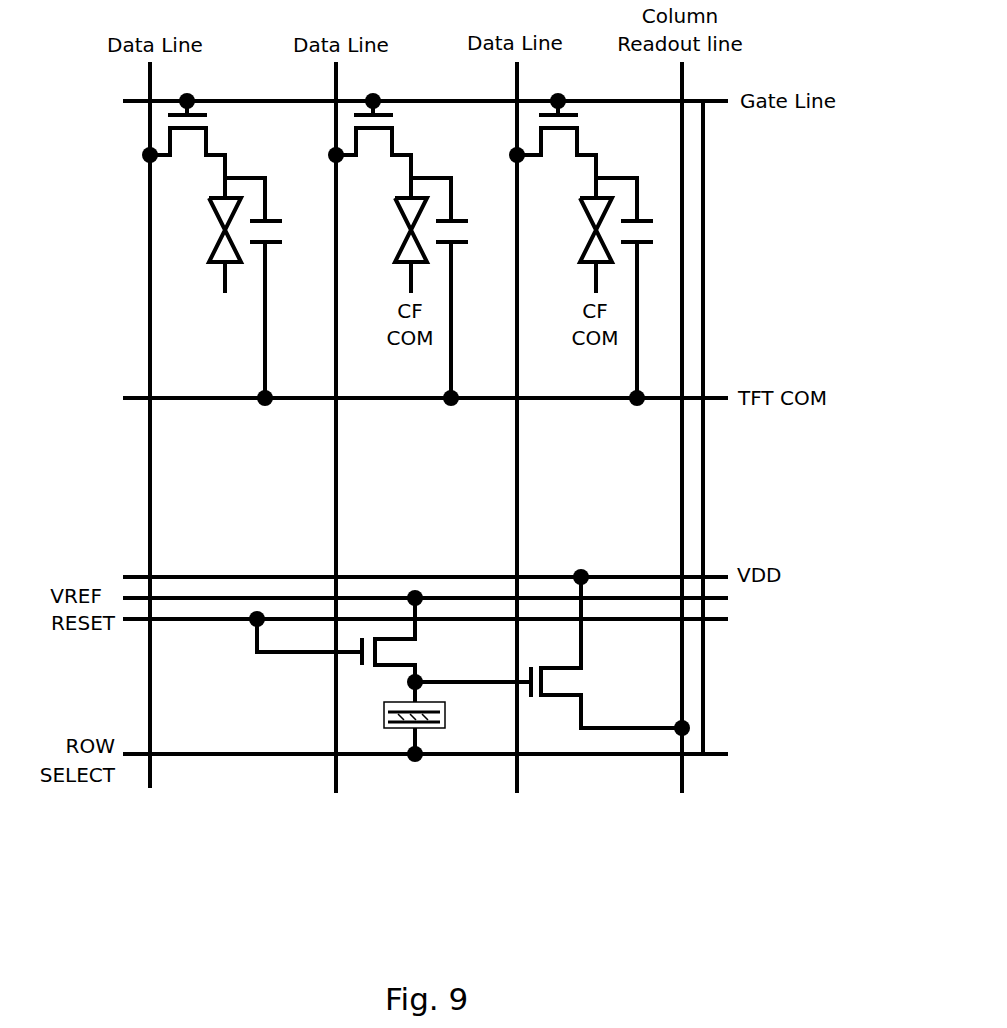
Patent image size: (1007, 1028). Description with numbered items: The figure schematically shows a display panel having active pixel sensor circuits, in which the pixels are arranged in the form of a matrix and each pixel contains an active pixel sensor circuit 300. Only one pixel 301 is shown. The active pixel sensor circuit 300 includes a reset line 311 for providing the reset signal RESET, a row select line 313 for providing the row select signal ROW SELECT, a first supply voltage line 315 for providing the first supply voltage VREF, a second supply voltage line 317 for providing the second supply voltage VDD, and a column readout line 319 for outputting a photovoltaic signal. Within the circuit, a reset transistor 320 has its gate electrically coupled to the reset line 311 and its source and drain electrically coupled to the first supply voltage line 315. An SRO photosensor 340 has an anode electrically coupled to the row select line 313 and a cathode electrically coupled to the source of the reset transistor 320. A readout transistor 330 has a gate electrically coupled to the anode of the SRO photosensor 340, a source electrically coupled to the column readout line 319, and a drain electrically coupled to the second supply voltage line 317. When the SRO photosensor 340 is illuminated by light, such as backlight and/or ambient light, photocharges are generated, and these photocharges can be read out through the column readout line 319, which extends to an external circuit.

The active pixel sensor circuit 300 is at (526, 712).
The pixel 301 is at (218, 378).
The reset line 311 is at (168, 621).
The row select line 313 is at (212, 756).
The first supply voltage line 315 is at (185, 597).
The second supply voltage line 317 is at (657, 575).
The column readout line 319 is at (682, 762).
The reset transistor 320 is at (368, 667).
The readout transistor 330 is at (532, 697).
The SRO photosensor 340 is at (433, 722).